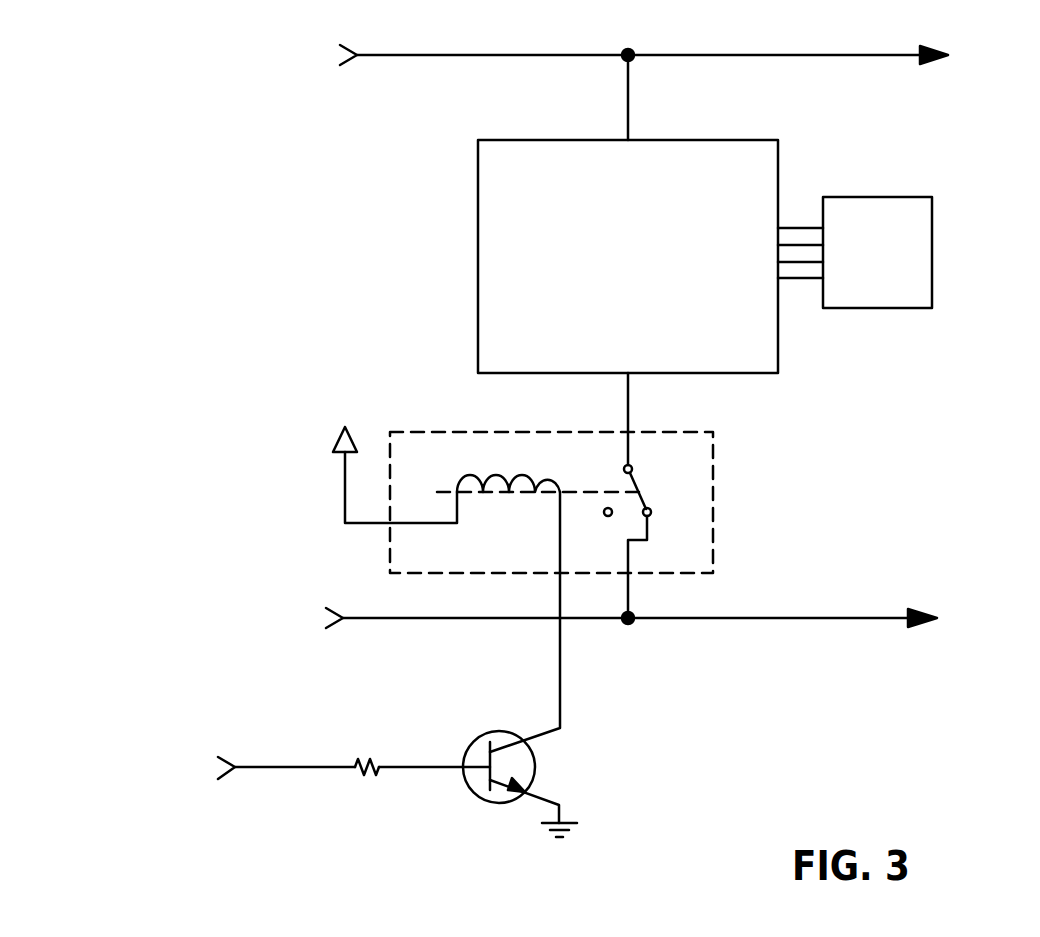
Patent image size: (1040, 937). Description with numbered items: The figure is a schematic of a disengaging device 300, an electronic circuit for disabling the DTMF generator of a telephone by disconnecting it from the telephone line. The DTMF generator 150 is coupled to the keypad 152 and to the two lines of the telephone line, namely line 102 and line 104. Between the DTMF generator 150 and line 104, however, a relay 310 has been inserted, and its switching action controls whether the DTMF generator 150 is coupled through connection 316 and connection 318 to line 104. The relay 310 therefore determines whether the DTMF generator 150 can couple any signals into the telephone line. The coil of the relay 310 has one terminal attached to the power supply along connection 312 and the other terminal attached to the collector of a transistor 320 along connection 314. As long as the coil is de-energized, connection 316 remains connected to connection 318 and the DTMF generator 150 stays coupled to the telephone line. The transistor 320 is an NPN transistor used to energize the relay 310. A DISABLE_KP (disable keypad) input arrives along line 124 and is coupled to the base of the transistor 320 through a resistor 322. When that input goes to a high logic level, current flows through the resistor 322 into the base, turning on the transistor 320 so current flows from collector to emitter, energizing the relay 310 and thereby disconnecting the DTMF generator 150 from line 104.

The telephone line 102 is at (437, 55).
The telephone line 104 is at (860, 618).
The connection 124 is at (265, 767).
The DTMF generator 150 is at (478, 190).
The keypad 152 is at (932, 215).
The disengaging device 300 is at (760, 727).
The relay 310 is at (713, 465).
The connection 312 is at (345, 490).
The connection 314 is at (559, 670).
The connection 316 is at (628, 412).
The connection 318 is at (628, 602).
The transistor 320 is at (470, 788).
The resistor 322 is at (355, 769).